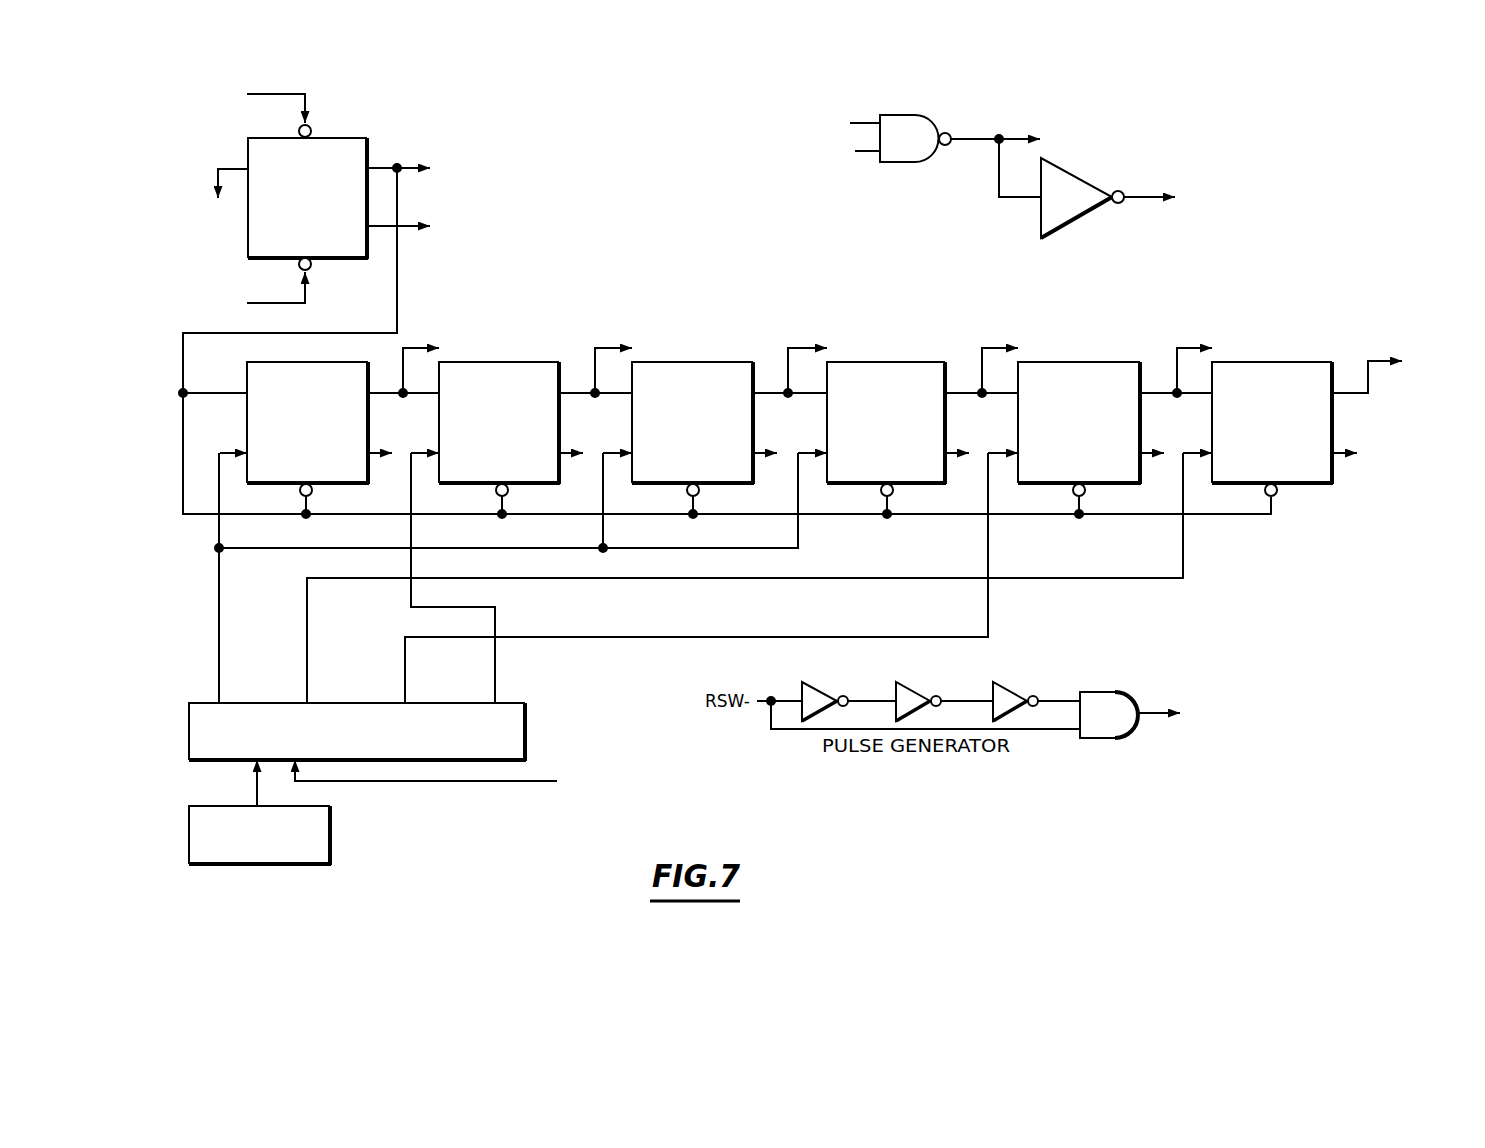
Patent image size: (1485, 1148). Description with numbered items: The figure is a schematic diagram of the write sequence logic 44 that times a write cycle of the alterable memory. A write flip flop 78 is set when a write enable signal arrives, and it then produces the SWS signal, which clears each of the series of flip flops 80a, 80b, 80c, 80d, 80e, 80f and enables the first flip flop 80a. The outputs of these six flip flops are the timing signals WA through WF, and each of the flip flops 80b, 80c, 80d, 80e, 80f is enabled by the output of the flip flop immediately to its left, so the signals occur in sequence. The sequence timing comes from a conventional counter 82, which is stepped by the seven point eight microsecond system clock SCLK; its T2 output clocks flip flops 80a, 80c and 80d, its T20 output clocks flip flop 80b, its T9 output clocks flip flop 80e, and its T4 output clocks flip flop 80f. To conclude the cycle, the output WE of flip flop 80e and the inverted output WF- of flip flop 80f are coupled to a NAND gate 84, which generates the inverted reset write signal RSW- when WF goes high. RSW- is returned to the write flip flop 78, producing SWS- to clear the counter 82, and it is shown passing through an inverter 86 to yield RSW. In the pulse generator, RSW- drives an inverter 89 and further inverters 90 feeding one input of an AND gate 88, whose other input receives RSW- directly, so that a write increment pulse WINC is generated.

The write sequence logic 44 is at (1292, 172).
The write flip flop 78 is at (296, 208).
The flip flop 80a is at (292, 433).
The flip flop 80b is at (483, 433).
The flip flop 80c is at (677, 433).
The flip flop 80d is at (870, 433).
The flip flop 80e is at (1063, 433).
The flip flop 80f is at (1285, 433).
The counter 82 is at (344, 746).
The NAND gate 84 is at (891, 150).
The inverter 86 is at (1054, 208).
The AND gate 88 is at (1091, 725).
The inverter 89 is at (820, 692).
The inverters 90 is at (911, 692).